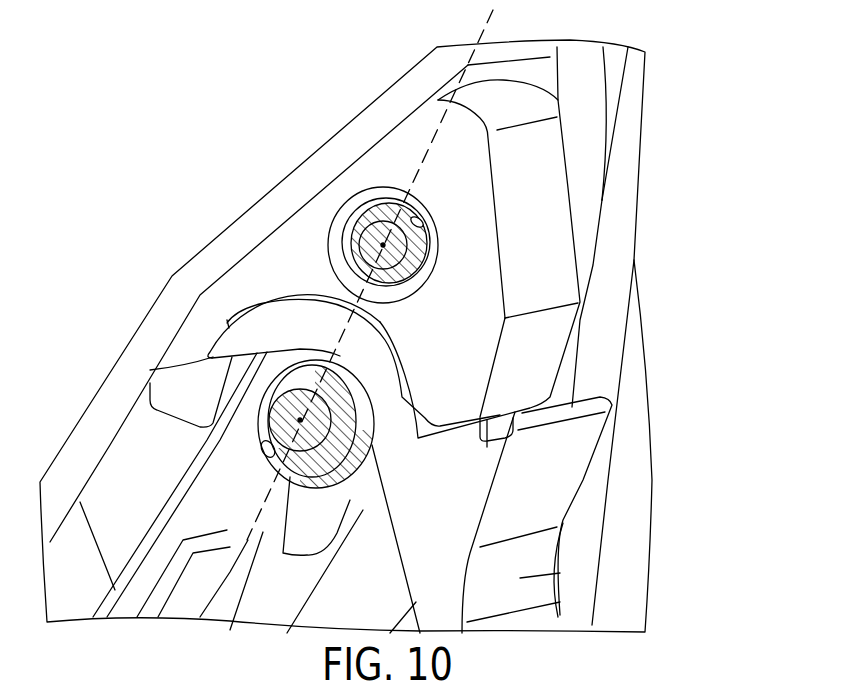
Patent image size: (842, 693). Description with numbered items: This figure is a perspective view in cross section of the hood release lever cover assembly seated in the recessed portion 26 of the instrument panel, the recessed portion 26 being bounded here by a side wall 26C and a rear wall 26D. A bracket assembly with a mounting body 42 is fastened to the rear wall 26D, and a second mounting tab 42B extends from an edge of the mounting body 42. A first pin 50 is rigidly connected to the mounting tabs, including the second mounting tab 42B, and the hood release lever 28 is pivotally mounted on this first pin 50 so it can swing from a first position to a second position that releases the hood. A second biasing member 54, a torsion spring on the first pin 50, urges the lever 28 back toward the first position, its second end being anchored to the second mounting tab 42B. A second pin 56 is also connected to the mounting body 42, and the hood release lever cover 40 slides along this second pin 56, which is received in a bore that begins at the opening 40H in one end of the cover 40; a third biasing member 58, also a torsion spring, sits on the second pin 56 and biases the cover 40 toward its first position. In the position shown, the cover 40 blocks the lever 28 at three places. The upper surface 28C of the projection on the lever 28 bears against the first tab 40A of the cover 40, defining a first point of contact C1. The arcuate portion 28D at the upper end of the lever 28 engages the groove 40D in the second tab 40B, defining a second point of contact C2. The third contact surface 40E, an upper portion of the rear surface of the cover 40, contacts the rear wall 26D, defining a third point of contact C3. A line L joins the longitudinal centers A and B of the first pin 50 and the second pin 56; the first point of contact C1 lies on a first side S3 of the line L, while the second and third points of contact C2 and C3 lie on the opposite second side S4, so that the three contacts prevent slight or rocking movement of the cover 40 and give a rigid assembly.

The recessed portion 26 is at (115, 590).
The side wall 26C is at (587, 147).
The rear wall 26D is at (388, 148).
The hood release lever 28 is at (505, 583).
The upper surface 28C is at (565, 395).
The arcuate portion 28D is at (150, 370).
The hood release lever cover 40 is at (537, 252).
The first tab 40A is at (533, 353).
The second tab 40B is at (183, 397).
The groove 40D is at (210, 355).
The third contact surface 40E is at (300, 211).
The opening 40H is at (335, 268).
The mounting body 42 is at (193, 583).
The second mounting tab 42B is at (377, 573).
The first pin 50 is at (343, 410).
The second biasing member 54 is at (285, 365).
The second pin 56 is at (413, 238).
The third biasing member 58 is at (345, 220).
The longitudinal axis A is at (407, 267).
The longitudinal center B is at (298, 423).
The first point of contact C1 is at (487, 447).
The second point of contact C2 is at (212, 356).
The third point of contact C3 is at (357, 165).
The line L is at (262, 502).
The first side S3 is at (490, 20).
The second side S4 is at (468, 64).